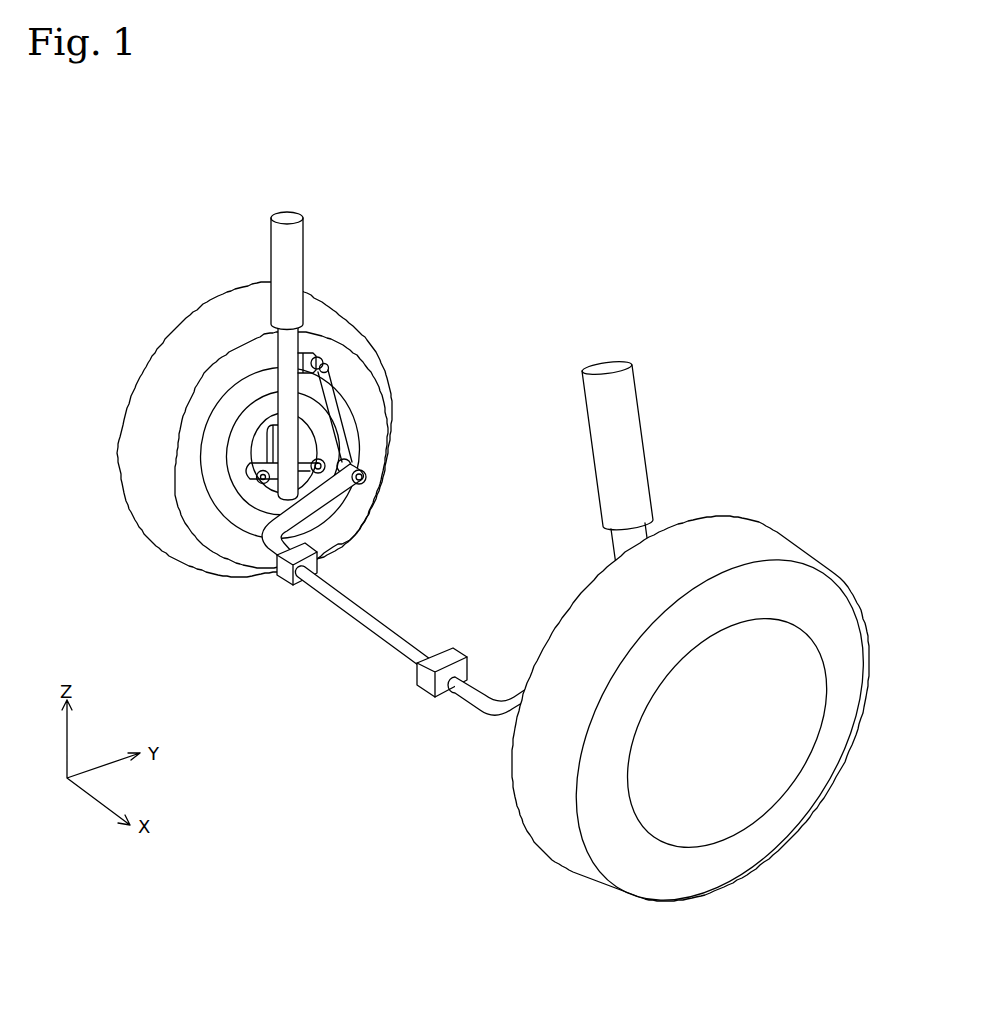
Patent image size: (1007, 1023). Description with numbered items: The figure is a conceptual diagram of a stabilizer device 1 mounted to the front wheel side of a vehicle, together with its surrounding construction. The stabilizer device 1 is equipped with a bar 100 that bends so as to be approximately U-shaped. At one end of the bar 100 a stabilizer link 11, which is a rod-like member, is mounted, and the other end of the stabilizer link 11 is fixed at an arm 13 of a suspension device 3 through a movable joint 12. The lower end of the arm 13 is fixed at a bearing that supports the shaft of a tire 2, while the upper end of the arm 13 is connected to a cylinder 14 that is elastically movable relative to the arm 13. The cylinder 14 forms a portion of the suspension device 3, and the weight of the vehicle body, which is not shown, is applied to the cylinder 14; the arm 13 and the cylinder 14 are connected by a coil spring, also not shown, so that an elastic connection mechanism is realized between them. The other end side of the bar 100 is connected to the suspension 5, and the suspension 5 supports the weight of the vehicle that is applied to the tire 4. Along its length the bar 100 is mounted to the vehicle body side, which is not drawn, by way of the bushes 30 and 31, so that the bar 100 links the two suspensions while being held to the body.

The stabilizer device 1 is at (396, 604).
The tire 2 is at (148, 397).
The suspension device 3 is at (311, 354).
The tire 4 is at (763, 547).
The suspension 5 is at (654, 400).
The stabilizer link 11 is at (331, 384).
The movable joint 12 is at (316, 356).
The arm 13 is at (285, 355).
The cylinder 14 is at (282, 240).
The bush 30 is at (285, 572).
The bush 31 is at (428, 676).
The bar 100 is at (342, 598).